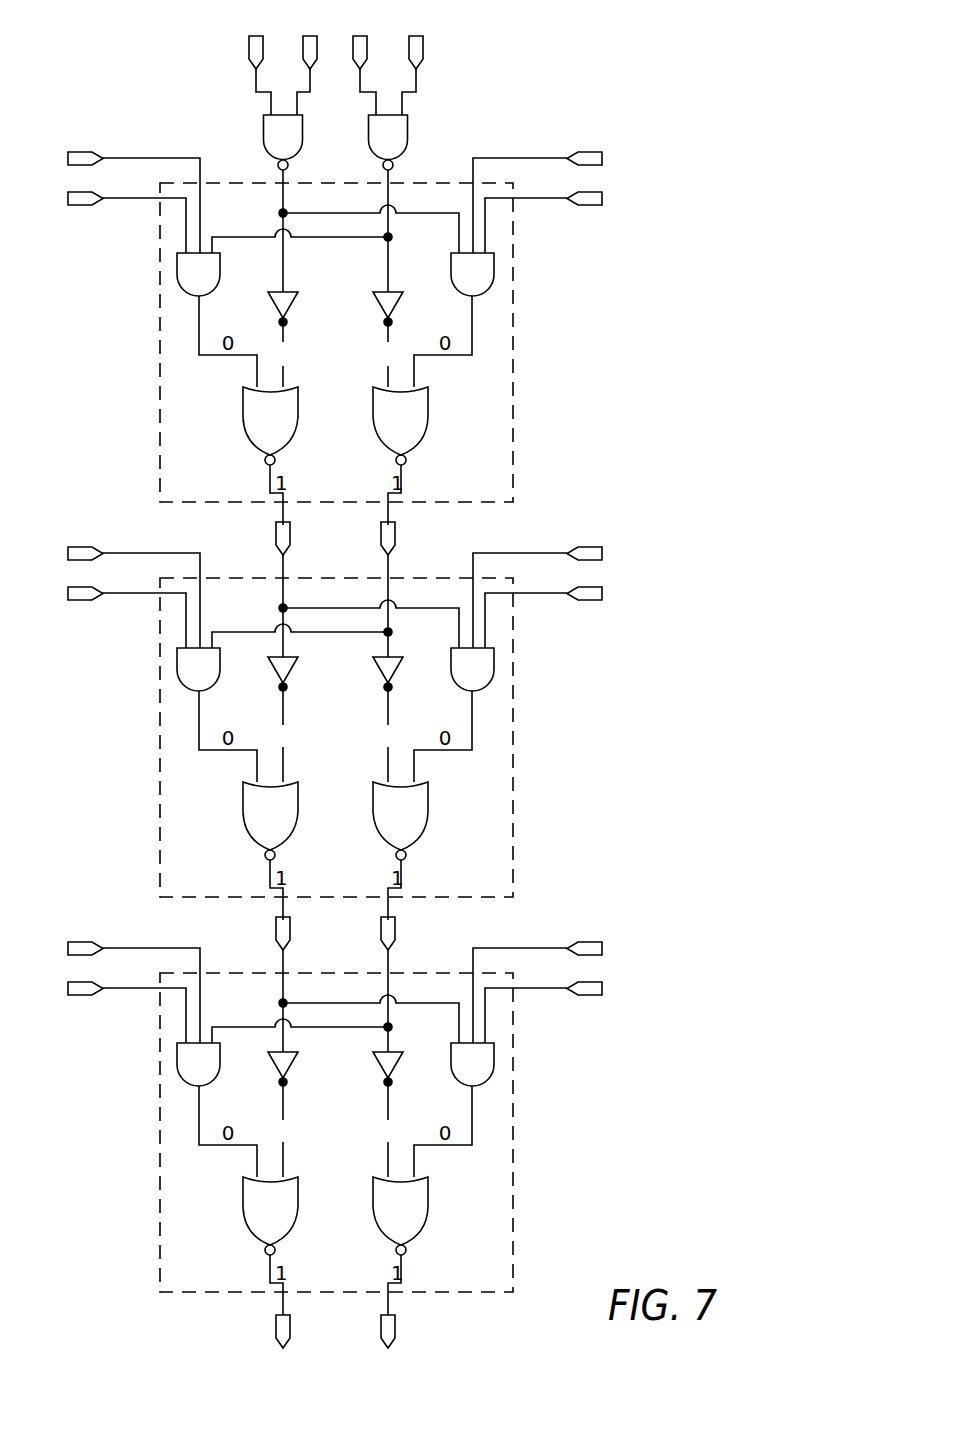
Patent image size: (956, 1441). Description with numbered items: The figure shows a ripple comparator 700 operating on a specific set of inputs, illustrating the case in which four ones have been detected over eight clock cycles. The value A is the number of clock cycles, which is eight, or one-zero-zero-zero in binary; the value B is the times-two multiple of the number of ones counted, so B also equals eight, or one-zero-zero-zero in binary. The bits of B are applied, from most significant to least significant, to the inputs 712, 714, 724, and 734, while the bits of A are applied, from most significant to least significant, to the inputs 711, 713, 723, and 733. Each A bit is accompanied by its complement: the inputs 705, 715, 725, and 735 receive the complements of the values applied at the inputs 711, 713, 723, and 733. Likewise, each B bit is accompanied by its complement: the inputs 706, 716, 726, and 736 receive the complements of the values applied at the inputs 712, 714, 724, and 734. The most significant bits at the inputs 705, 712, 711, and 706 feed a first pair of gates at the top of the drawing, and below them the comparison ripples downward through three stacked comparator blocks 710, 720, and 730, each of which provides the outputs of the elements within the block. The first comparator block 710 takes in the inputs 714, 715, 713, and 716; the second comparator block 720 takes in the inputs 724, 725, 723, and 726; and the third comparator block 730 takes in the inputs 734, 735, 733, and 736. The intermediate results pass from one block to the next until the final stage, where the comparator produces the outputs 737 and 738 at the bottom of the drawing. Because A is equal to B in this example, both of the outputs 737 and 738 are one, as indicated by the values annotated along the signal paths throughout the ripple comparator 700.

The ripple comparator 700 is at (598, 32).
The input 705 is at (258, 80).
The input 712 is at (298, 103).
The input 711 is at (362, 80).
The input 706 is at (403, 103).
The comparator block 710 is at (334, 322).
The comparator block 720 is at (334, 717).
The comparator block 730 is at (334, 1112).
The input 714 is at (127, 158).
The input 715 is at (127, 200).
The input 713 is at (543, 157).
The input 716 is at (543, 200).
The input 724 is at (118, 581).
The input 725 is at (107, 615).
The input 723 is at (553, 581).
The input 726 is at (562, 615).
The input 734 is at (118, 976).
The input 735 is at (107, 1010).
The input 733 is at (553, 976).
The input 736 is at (562, 1010).
The output 737 is at (285, 1307).
The output 738 is at (390, 1307).